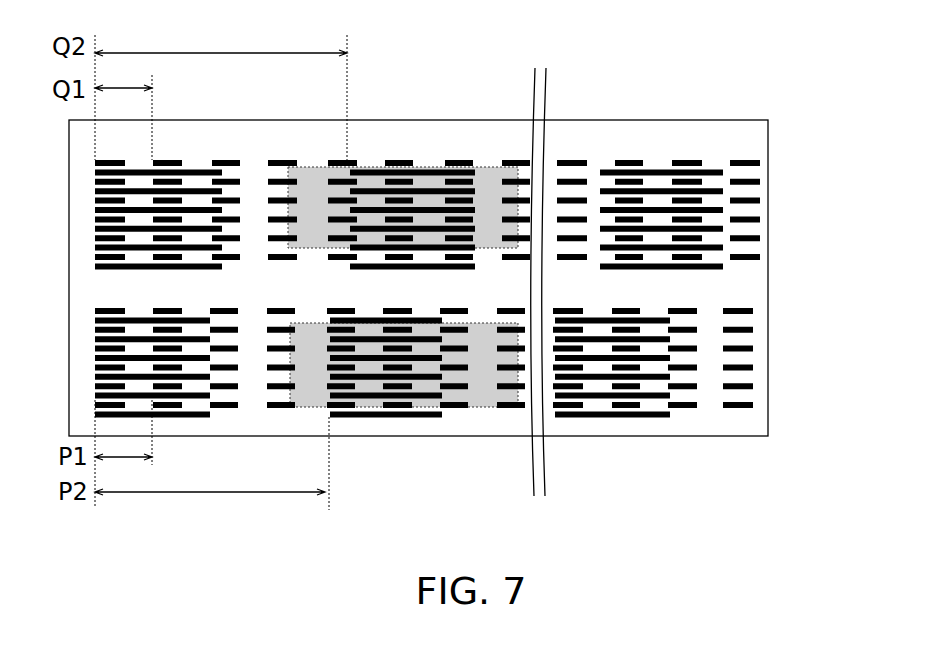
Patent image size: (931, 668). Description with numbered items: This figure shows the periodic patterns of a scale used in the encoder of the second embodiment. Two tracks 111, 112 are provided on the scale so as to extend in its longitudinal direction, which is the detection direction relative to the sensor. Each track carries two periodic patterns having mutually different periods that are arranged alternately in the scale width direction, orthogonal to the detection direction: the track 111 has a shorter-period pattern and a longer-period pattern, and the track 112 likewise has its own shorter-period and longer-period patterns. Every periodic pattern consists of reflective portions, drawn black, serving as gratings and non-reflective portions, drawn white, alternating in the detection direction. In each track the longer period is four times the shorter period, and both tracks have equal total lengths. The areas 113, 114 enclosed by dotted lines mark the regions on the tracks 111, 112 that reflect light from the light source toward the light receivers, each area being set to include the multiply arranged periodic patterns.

The track 111 is at (762, 357).
The track 112 is at (762, 190).
The area 113 is at (394, 160).
The area 114 is at (393, 418).